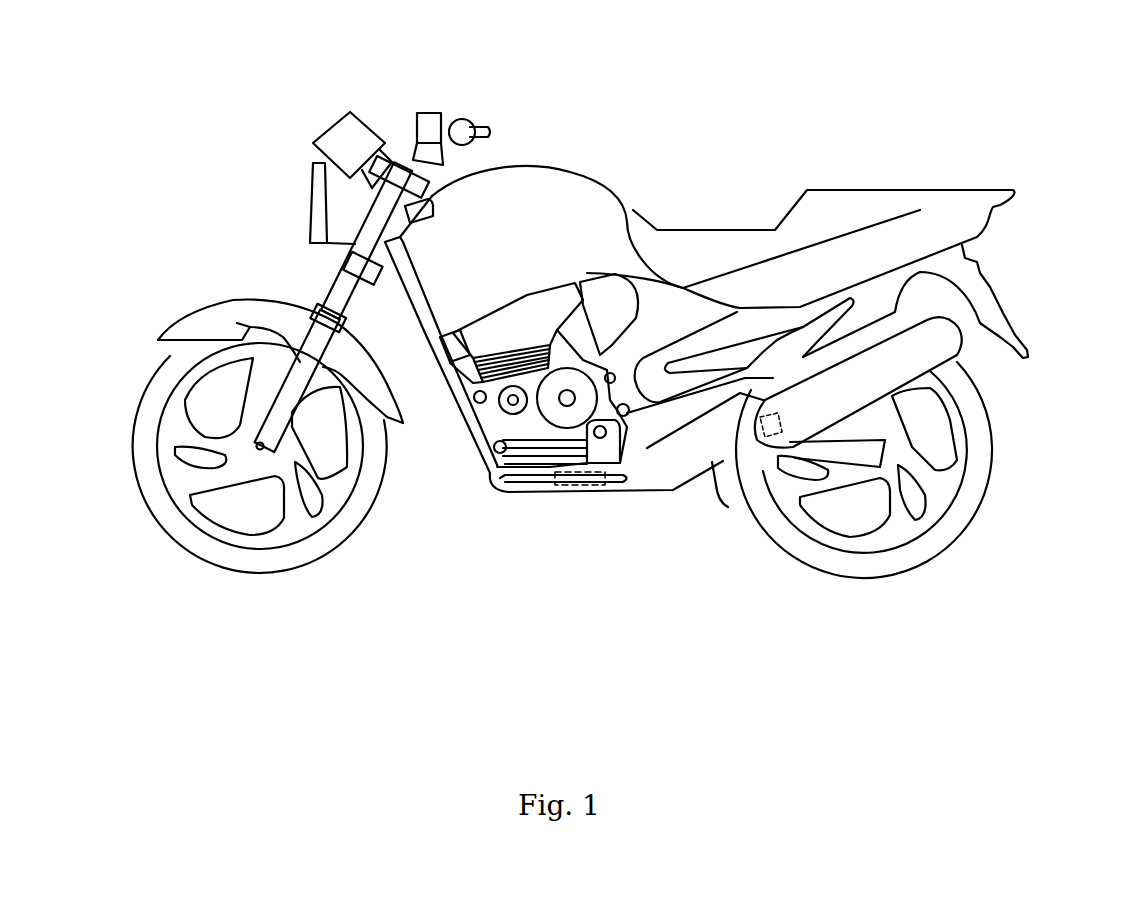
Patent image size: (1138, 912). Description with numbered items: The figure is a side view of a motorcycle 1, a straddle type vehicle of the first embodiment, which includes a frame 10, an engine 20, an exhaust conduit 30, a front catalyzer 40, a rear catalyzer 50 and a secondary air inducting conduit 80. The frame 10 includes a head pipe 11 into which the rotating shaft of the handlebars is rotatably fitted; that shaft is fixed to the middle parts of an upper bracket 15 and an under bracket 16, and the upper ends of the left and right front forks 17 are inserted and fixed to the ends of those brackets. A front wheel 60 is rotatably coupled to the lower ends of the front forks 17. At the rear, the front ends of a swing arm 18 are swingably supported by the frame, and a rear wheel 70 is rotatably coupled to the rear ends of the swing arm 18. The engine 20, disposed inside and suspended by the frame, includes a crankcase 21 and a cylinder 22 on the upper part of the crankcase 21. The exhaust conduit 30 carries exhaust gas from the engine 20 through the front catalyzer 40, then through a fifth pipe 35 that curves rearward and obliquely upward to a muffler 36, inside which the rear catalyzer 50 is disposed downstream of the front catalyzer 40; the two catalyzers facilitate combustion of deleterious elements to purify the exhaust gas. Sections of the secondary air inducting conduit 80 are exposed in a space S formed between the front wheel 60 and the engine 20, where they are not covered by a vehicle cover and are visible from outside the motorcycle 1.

The motorcycle 1 is at (1011, 172).
The frame 10 is at (497, 485).
The head pipe 11 is at (433, 197).
The upper bracket 15 is at (408, 142).
The under bracket 16 is at (352, 264).
The front forks 17 is at (237, 323).
The swing arm 18 is at (877, 445).
The engine 20 is at (562, 298).
The crankcase 21 is at (527, 470).
The cylinder 22 is at (513, 323).
The exhaust conduit 30 is at (657, 485).
The fifth pipe 35 is at (717, 507).
The muffler 36 is at (935, 343).
The front catalyzer 40 is at (573, 487).
The rear catalyzer 50 is at (780, 440).
The front wheel 60 is at (160, 382).
The rear wheel 70 is at (975, 483).
The secondary air inducting conduit 80 is at (608, 490).
The space S is at (418, 393).